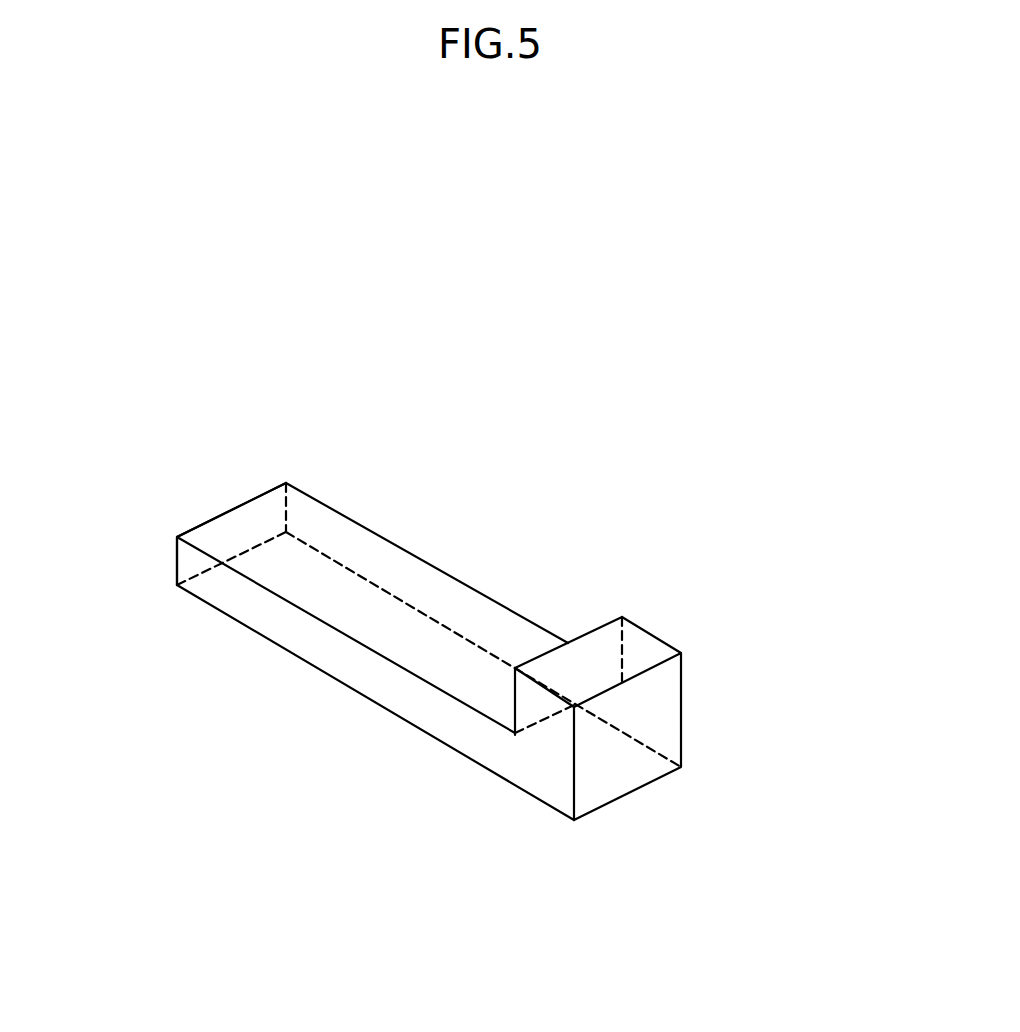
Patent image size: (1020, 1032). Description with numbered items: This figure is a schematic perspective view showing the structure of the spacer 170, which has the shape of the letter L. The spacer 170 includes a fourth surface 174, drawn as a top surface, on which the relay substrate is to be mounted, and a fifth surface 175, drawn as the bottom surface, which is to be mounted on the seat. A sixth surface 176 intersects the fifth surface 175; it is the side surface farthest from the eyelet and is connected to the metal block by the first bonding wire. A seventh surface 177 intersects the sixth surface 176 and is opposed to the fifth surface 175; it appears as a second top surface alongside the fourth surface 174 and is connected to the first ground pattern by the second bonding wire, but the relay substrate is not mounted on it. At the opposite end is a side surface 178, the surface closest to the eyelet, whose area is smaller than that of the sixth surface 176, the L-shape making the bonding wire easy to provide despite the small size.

The spacer 170 is at (435, 592).
The fourth surface 174 is at (389, 636).
The fifth surface 175 is at (403, 688).
The sixth surface 176 is at (644, 714).
The seventh surface 177 is at (637, 655).
The side surface 178 is at (237, 532).